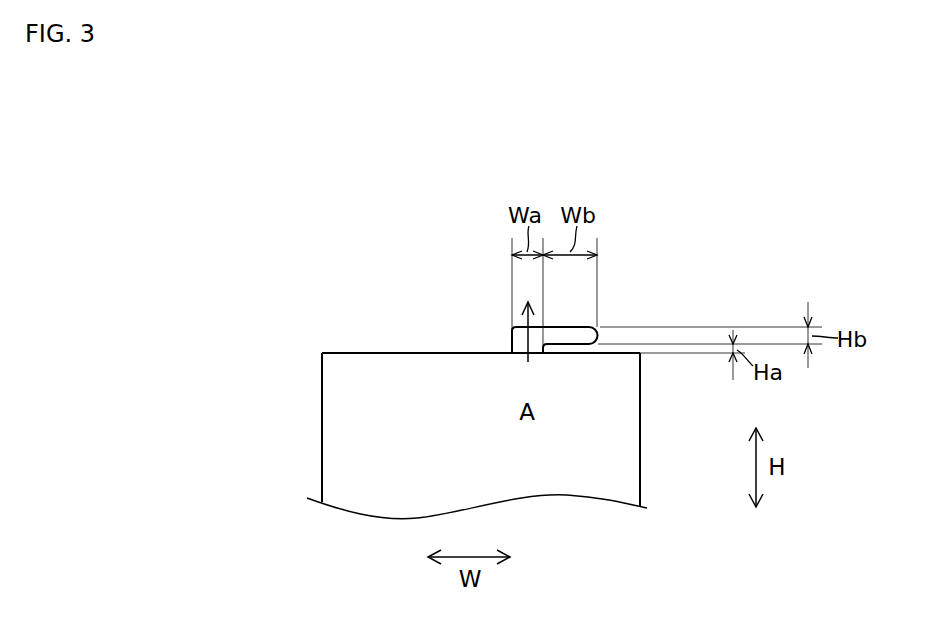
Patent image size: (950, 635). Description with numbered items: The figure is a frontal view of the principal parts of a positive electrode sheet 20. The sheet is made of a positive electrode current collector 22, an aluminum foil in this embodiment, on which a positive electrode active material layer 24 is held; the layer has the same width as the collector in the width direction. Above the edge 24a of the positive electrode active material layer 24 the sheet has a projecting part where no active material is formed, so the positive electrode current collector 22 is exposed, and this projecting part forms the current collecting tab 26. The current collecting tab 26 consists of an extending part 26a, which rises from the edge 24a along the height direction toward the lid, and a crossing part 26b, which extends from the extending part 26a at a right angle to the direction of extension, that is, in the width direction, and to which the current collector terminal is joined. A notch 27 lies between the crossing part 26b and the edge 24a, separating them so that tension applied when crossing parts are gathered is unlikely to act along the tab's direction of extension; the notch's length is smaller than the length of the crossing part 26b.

The positive electrode sheet 20 is at (333, 352).
The positive electrode active material layer 24 is at (330, 434).
The edge of the positive electrode active material layer 24a is at (375, 352).
The current collecting tab 26 is at (510, 331).
The extending part 26a is at (508, 349).
The crossing part 26b is at (577, 335).
The positive electrode current collector 22 is at (600, 337).
The notch 27 is at (573, 348).